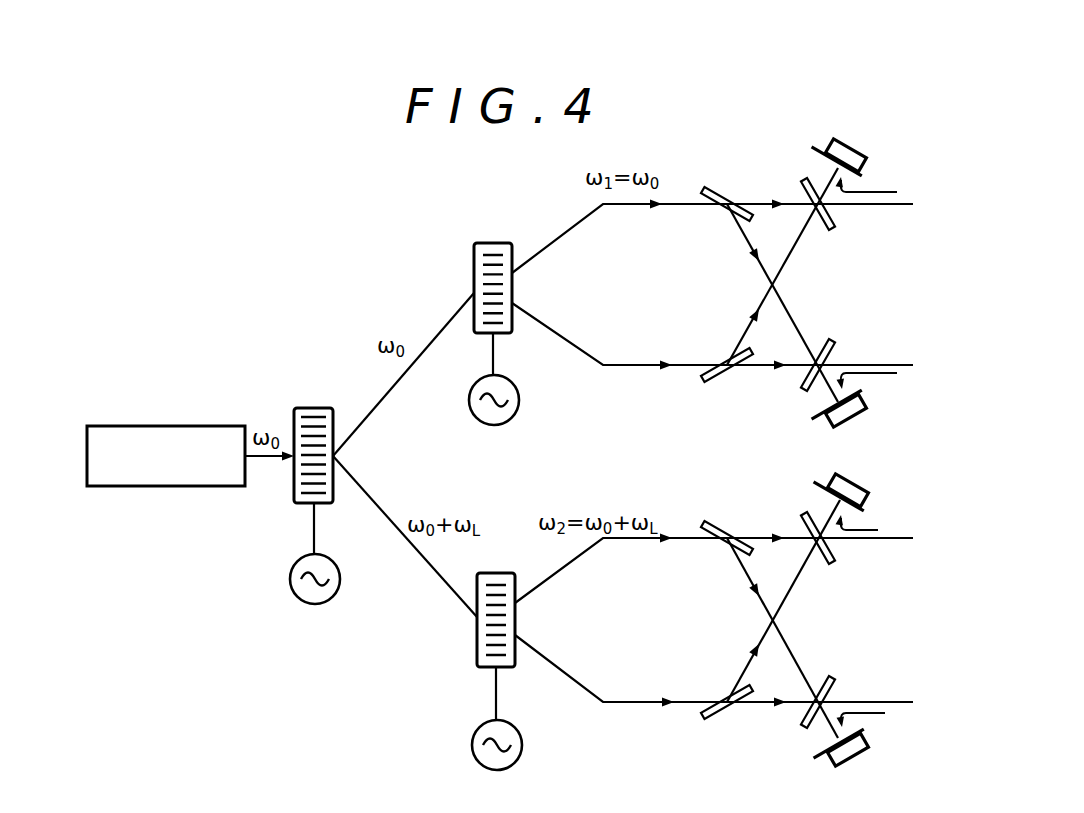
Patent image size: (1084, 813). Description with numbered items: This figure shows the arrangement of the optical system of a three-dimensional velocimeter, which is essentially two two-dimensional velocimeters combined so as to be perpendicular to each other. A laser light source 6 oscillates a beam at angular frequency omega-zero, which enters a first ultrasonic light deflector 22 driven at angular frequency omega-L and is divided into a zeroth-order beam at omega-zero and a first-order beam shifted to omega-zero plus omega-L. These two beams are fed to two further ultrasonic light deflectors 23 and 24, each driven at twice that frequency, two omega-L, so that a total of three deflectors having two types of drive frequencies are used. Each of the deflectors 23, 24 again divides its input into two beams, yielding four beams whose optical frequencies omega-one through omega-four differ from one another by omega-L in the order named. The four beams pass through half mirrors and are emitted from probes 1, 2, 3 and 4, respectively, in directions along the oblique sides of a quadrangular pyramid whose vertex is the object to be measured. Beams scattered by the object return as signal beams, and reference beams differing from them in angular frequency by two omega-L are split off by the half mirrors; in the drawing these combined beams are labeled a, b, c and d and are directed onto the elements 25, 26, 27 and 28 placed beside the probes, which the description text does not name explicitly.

The laser light source 6 is at (183, 486).
The ultrasonic light deflector 22 is at (310, 408).
The ultrasonic light deflector 23 is at (493, 243).
The ultrasonic light deflector 24 is at (496, 573).
The photodetector 25 is at (845, 143).
The photodetector 26 is at (828, 422).
The photodetector 27 is at (847, 480).
The photodetector 28 is at (852, 762).
The probe 1 is at (721, 230).
The probe 2 is at (724, 343).
The probe 3 is at (724, 564).
The probe 4 is at (723, 677).
The combined beam a is at (873, 192).
The combined beam b is at (880, 373).
The combined beam c is at (878, 530).
The combined beam d is at (885, 713).